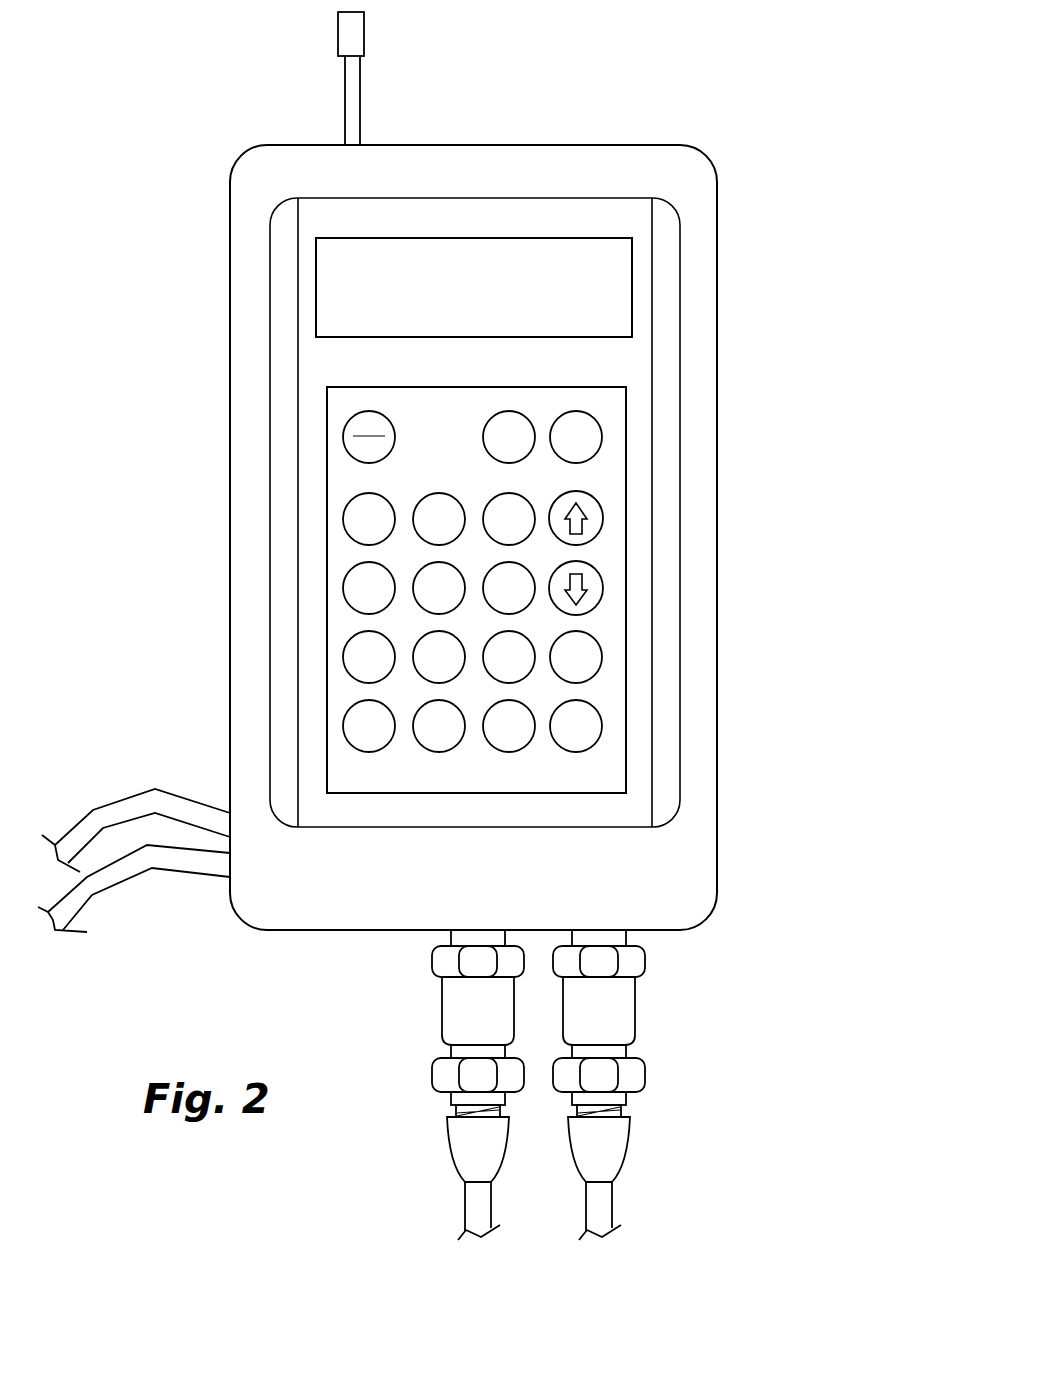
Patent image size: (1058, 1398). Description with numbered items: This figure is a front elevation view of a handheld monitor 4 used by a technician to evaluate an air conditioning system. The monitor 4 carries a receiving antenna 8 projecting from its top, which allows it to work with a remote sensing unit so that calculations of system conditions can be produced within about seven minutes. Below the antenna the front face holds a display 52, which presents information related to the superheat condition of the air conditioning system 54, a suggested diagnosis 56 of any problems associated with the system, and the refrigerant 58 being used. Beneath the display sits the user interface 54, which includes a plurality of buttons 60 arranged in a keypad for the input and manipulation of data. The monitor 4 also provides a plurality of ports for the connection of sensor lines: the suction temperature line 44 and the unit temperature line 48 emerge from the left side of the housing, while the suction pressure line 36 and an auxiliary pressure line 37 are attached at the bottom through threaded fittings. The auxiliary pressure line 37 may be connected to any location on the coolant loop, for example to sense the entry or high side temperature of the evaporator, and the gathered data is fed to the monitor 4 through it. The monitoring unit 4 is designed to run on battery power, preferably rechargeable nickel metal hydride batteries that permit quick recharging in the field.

The monitor 4 is at (742, 198).
The receiving antenna 8 is at (360, 87).
The suction pressure line 36 is at (463, 1193).
The auxiliary pressure line 37 is at (613, 1205).
The suction temperature line 44 is at (140, 790).
The unit temperature line 48 is at (168, 870).
The display 52 is at (605, 285).
The user interface 54 is at (328, 277).
The suggested diagnosis 56 is at (327, 298).
The refrigerant 58 is at (618, 322).
The buttons 60 is at (348, 590).